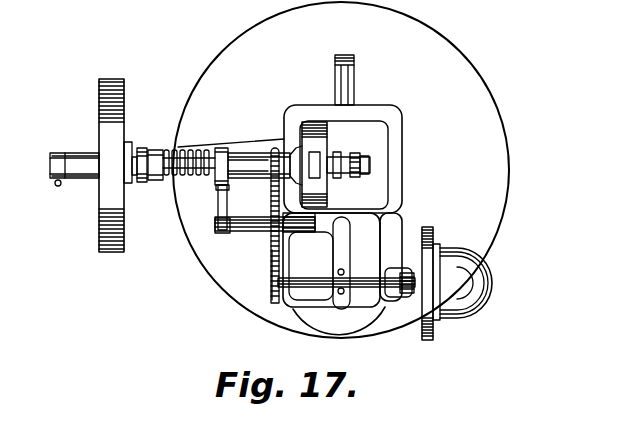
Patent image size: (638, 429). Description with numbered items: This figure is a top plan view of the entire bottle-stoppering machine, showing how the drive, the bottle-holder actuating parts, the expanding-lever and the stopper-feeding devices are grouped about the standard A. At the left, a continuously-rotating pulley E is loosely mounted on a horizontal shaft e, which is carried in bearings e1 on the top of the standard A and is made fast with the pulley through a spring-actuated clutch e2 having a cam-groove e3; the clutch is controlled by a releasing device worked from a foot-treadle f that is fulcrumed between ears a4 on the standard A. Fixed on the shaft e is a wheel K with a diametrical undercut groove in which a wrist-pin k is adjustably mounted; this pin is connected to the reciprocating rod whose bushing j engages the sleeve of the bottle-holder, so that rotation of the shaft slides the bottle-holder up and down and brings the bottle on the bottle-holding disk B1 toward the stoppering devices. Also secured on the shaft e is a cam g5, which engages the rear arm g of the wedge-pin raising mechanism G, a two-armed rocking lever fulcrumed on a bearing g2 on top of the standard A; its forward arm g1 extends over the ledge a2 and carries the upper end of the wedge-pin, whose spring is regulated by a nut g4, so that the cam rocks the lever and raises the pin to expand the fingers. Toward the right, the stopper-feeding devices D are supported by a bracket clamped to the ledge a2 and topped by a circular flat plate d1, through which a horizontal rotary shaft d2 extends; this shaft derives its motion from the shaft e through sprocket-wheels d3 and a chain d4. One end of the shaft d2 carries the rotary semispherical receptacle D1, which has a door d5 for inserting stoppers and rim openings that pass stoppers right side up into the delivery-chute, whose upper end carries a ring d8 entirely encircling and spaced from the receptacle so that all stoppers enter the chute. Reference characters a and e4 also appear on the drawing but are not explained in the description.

The pulley E is at (99, 122).
The bearings e1 is at (78, 153).
The spring-actuated clutch e2 is at (143, 148).
The cam-groove e3 is at (155, 150).
The spring e4 is at (190, 152).
The cam g5 is at (225, 147).
The horizontal shaft e is at (267, 150).
The sprocket-wheels d3 is at (277, 148).
The chain d4 is at (272, 248).
The standard A is at (402, 147).
The housing wall a is at (455, 172).
The wheel K is at (313, 122).
The bushing j is at (345, 157).
The wrist-pin k is at (367, 163).
The foot-treadle f is at (345, 55).
The ears a4 is at (355, 72).
The bottle-holding disk B1 is at (365, 305).
The forward arm of rocking lever g1 is at (340, 300).
The nut g4 is at (345, 273).
The ledge a2 is at (371, 237).
The rear arm of rocking lever g is at (218, 205).
The bearing g2 is at (300, 233).
The horizontal rotary shaft d2 is at (320, 278).
The door d5 is at (397, 275).
The circular flat plate d1 is at (425, 342).
The ring d8 is at (434, 342).
The stopper-feeding devices D is at (479, 283).
The rotary semispherical receptacle D1 is at (473, 306).
The wedge-pin raising mechanism G is at (335, 226).